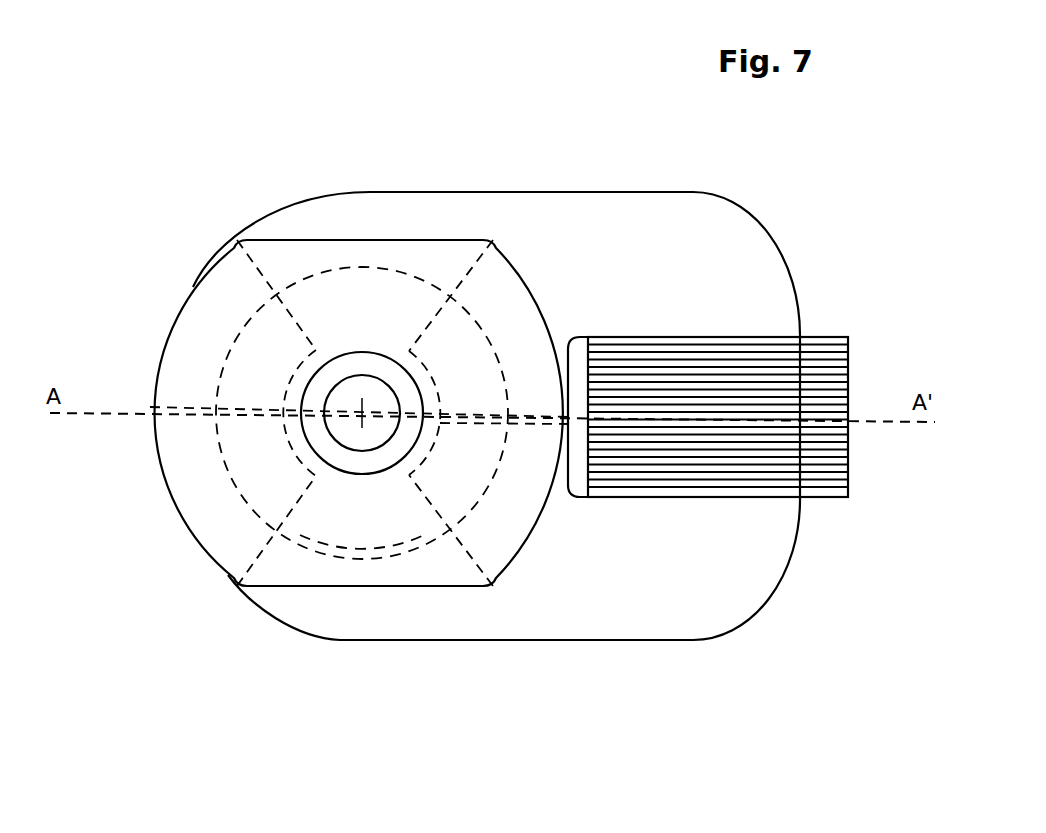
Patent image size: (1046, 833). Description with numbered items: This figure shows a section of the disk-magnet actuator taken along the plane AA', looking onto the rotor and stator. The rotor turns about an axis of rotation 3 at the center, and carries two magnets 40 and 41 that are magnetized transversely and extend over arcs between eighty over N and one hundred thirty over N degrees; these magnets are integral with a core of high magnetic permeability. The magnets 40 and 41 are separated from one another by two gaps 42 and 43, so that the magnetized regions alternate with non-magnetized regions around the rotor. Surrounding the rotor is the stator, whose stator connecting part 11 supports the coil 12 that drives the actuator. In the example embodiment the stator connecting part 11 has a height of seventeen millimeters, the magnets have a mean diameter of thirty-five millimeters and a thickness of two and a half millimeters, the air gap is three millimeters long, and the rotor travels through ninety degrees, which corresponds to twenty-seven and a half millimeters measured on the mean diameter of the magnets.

The axis of rotation 3 is at (350, 408).
The stator connecting part 11 is at (690, 318).
The coil 12 is at (708, 397).
The magnet 40 is at (508, 302).
The magnet 41 is at (213, 287).
The gap 42 is at (353, 250).
The gap 43 is at (377, 542).